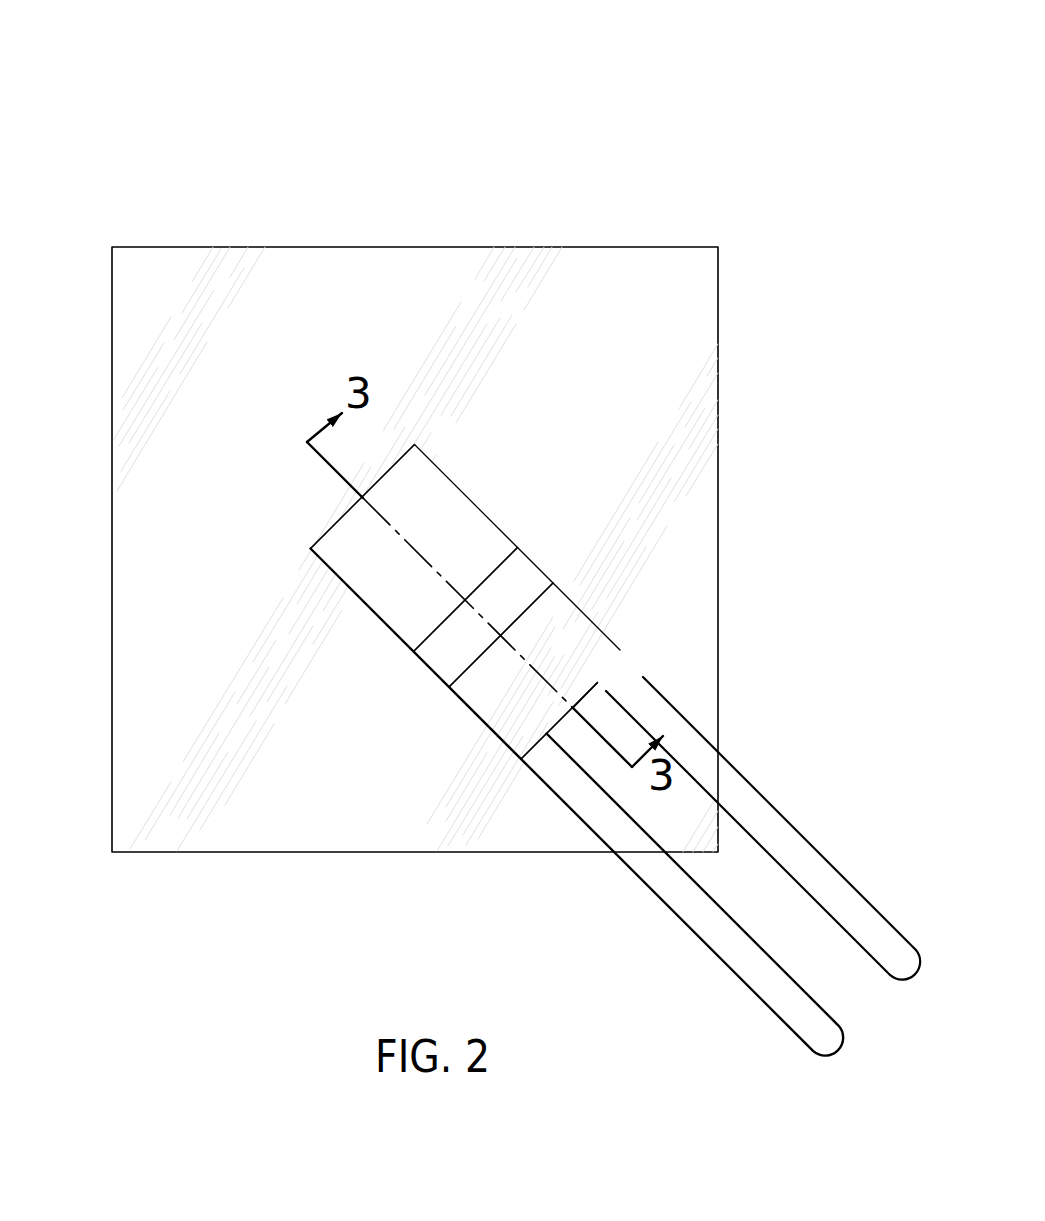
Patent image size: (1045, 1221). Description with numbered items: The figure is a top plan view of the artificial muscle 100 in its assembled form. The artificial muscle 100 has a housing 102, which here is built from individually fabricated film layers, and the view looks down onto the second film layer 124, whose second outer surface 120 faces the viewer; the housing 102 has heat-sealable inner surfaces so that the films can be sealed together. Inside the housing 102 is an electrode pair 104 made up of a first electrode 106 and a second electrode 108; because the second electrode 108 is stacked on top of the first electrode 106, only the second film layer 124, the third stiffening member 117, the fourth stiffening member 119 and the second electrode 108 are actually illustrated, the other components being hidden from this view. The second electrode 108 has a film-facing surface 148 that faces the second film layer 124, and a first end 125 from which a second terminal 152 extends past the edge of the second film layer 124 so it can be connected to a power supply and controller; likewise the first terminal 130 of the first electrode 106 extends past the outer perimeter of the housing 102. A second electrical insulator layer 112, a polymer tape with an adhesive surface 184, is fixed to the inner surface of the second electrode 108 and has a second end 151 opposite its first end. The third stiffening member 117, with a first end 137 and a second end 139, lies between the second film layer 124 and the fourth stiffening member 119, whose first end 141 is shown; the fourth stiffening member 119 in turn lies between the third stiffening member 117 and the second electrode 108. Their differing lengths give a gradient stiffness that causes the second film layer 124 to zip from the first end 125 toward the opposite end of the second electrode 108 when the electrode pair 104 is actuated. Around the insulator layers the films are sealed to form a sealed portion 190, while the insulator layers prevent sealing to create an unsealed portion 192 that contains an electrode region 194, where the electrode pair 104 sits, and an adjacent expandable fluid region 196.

The artificial muscle 100 is at (514, 112).
The housing 102 is at (360, 220).
The electrode pair 104 is at (853, 1000).
The first electrode 106 is at (653, 935).
The second electrode 108 is at (622, 645).
The second electrical insulator layer 112 is at (467, 473).
The third stiffening member 117 is at (537, 577).
The fourth stiffening member 119 is at (578, 615).
The second outer surface 120 is at (438, 252).
The second film layer 124 is at (295, 235).
The first end of second electrode 125 is at (571, 708).
The first terminal 130 is at (778, 1008).
The first end of third stiffening member 137 is at (484, 648).
The second end of third stiffening member 139 is at (438, 629).
The first end of fourth stiffening member 141 is at (489, 718).
The film-facing surface of second electrode 148 is at (493, 731).
The second end of second electrical insulator layer 151 is at (309, 547).
The second terminal 152 is at (759, 791).
The adhesive surface 184 is at (481, 521).
The sealed portion 190 is at (135, 582).
The unsealed portion 192 is at (380, 628).
The electrode region 194 is at (440, 690).
The expandable fluid region 196 is at (338, 585).